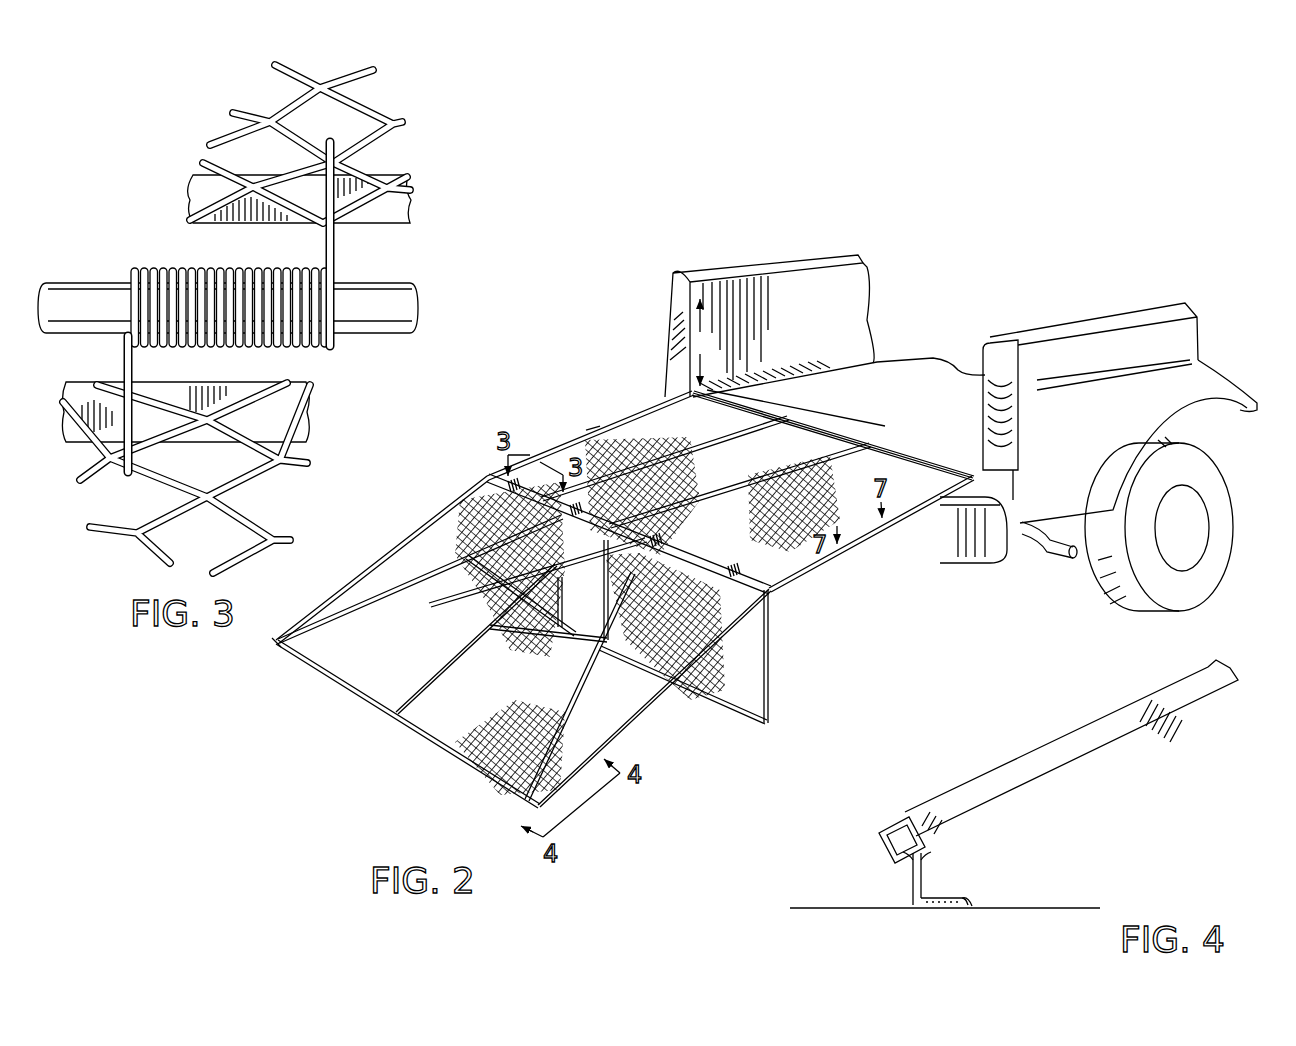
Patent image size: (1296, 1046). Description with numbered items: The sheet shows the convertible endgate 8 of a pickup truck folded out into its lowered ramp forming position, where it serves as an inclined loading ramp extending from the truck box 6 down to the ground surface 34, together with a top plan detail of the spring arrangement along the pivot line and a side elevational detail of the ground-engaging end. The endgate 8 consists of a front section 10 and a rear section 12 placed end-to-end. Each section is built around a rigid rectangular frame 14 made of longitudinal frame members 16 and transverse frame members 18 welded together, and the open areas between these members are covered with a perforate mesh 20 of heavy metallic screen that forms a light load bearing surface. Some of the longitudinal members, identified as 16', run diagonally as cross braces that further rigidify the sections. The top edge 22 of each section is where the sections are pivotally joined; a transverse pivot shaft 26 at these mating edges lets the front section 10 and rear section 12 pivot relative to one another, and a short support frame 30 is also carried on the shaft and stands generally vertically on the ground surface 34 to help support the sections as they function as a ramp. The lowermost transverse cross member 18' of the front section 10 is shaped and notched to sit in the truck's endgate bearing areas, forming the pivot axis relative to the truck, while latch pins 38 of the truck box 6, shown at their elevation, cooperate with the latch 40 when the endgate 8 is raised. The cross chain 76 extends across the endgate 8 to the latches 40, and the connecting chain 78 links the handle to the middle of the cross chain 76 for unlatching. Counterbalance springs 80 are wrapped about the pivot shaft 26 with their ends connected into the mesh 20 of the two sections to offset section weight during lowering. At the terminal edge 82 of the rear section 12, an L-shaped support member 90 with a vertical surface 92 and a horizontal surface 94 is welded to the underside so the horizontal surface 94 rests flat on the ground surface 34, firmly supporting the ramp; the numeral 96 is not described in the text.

In FIG. 2, the truck box 6 is at (770, 268).
In FIG. 2, the latch pin 38 is at (673, 287).
In FIG. 2, the front section 10 is at (633, 410).
In FIG. 2, the endgate 8 is at (524, 406).
In FIG. 2, the latch 40 is at (590, 427).
In FIG. 2, the longitudinal frame member 16 is at (614, 580).
In FIG. 4, the longitudinal frame member 16 is at (1071, 748).
In FIG. 2, the diagonal cross brace 16' is at (456, 658).
In FIG. 2, the cross chain 76 is at (658, 450).
In FIG. 2, the connecting chain 78 is at (772, 468).
In FIG. 3, the transverse pivot shaft 26 is at (386, 285).
In FIG. 2, the transverse pivot shaft 26 is at (683, 513).
In FIG. 2, the lowermost transverse cross member 18' is at (833, 433).
In FIG. 2, the transverse frame member 18 is at (408, 724).
In FIG. 4, the transverse frame member 18 is at (902, 813).
In FIG. 2, the rear section 12 is at (437, 537).
In FIG. 4, the rear section 12 is at (1022, 750).
In FIG. 2, the top edge 22 is at (597, 580).
In FIG. 2, the frame 14 is at (818, 579).
In FIG. 2, the ground surface 34 is at (908, 674).
In FIG. 4, the ground surface 34 is at (865, 910).
In FIG. 2, the support frame 30 is at (771, 640).
In FIG. 3, the perforate mesh 20 is at (376, 70).
In FIG. 2, the perforate mesh 20 is at (498, 775).
In FIG. 2, the terminal edge 82 is at (345, 702).
In FIG. 4, the terminal edge 82 is at (881, 846).
In FIG. 3, the counterbalance spring 80 is at (333, 343).
In FIG. 4, the L-shaped support member 90 is at (909, 876).
In FIG. 4, the vertical surface 92 is at (928, 870).
In FIG. 4, the horizontal surface 94 is at (936, 912).
In FIG. 4, the weld 96 is at (968, 898).